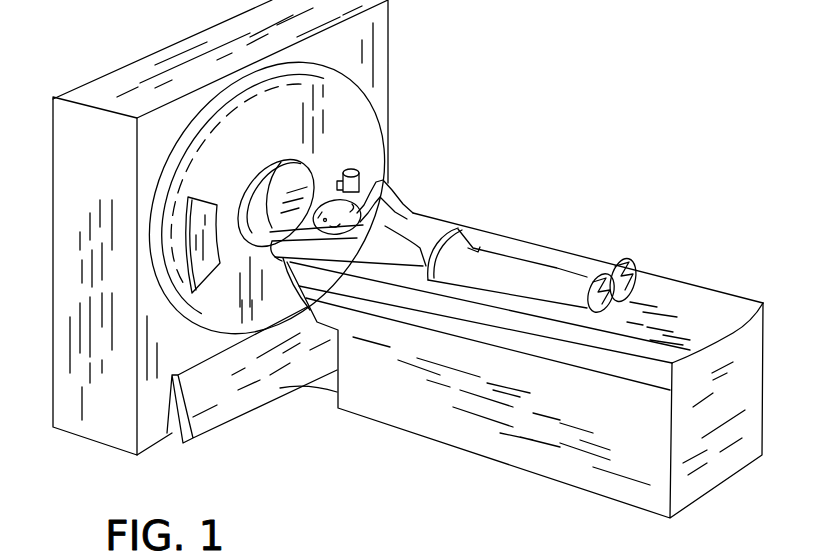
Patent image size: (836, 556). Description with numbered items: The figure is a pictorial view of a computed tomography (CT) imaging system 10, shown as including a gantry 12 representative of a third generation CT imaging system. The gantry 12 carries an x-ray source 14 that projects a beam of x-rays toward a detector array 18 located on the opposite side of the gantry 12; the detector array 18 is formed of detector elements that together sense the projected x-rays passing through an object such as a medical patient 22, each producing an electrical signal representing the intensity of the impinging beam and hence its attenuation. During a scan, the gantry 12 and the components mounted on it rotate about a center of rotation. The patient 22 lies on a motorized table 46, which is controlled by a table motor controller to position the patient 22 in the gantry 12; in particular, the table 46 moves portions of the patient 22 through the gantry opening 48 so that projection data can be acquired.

The computed tomography (CT) imaging system 10 is at (310, 412).
The gantry 12 is at (83, 147).
The x-ray source 14 is at (277, 232).
The detector array 18 is at (200, 277).
The patient 22 is at (403, 221).
The motorized table 46 is at (420, 415).
The gantry opening 48 is at (292, 184).